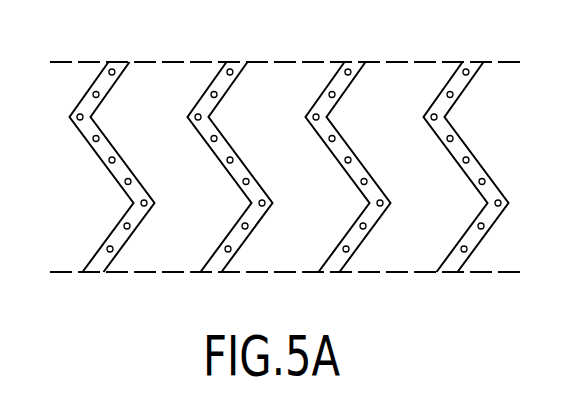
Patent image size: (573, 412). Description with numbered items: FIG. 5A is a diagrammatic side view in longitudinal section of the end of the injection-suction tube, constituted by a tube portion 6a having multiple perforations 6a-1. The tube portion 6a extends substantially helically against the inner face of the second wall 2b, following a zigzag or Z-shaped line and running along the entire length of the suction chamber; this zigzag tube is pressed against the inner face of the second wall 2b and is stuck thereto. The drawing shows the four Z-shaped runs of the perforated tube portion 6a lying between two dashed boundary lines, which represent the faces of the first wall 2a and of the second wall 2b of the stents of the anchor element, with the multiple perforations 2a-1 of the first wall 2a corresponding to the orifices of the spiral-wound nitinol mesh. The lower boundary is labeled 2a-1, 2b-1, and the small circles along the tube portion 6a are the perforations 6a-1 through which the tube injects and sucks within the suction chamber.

The first wall 2a is at (287, 37).
The second wall 2b is at (196, 61).
The multiple perforations of the first wall 2a-1 is at (287, 297).
The edge of second substrate layer 2b-1 is at (470, 273).
The tube portion 6a is at (461, 139).
The multiple perforations 6a-1 is at (467, 250).